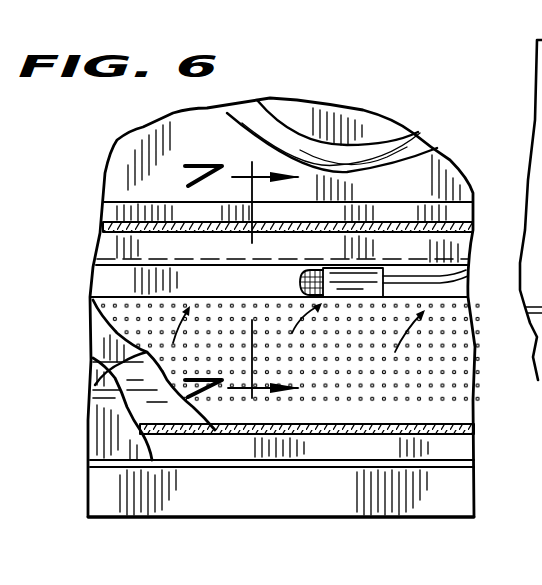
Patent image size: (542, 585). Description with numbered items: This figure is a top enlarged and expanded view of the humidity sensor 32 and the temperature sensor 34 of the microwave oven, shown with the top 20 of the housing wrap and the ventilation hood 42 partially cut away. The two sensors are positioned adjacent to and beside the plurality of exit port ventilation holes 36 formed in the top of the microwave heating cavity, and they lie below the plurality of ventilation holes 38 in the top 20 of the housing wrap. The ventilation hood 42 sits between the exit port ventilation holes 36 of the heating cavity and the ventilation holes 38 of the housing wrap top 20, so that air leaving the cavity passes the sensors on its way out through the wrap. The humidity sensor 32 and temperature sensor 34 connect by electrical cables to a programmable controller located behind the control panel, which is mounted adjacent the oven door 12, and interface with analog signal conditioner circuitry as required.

The oven door 12 is at (330, 502).
The top 20 is at (97, 437).
The humidity sensor 32 is at (300, 282).
The temperature sensor 34 is at (300, 278).
The exit port ventilation holes 36 is at (453, 388).
The ventilation holes 38 is at (100, 398).
The ventilation hood 42 is at (93, 378).